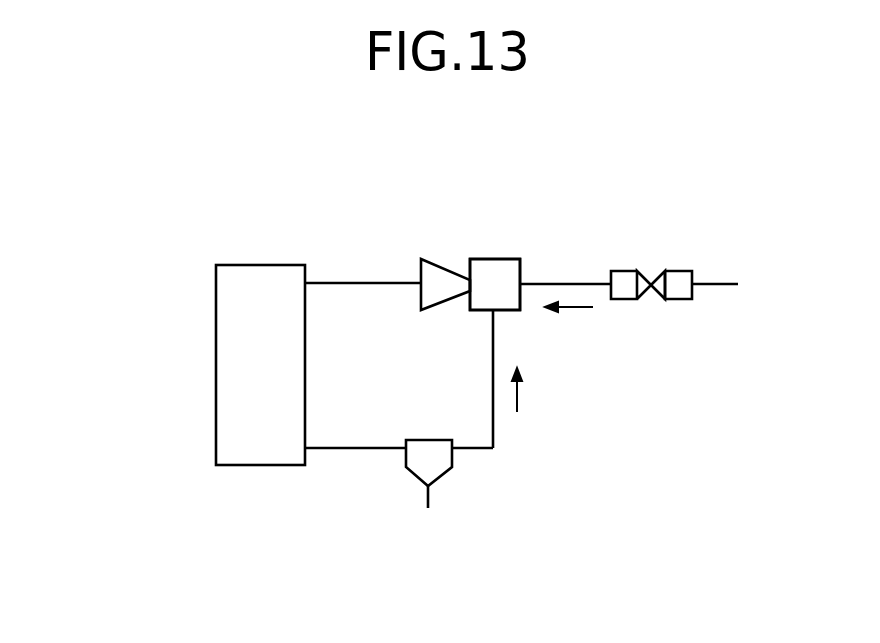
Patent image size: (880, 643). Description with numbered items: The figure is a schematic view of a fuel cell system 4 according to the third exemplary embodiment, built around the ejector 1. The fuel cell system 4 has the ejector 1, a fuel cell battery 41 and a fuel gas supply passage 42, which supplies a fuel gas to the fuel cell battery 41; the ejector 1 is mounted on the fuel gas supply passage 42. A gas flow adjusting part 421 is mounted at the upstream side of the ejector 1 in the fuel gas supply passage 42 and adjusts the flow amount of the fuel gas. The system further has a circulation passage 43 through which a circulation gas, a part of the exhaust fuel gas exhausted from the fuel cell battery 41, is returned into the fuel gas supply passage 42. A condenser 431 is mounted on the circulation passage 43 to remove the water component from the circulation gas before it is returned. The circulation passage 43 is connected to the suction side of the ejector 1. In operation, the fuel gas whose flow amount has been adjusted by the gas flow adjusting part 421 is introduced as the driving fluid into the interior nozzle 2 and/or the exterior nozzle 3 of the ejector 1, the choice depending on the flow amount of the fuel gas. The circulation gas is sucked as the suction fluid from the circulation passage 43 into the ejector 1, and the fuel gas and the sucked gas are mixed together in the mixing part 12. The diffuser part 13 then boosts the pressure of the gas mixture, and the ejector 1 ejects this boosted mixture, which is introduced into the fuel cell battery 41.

The ejector 1 is at (443, 215).
The interior nozzle 2 is at (513, 273).
The exterior nozzle 3 is at (490, 271).
The mixing part 12 is at (443, 283).
The diffuser part 13 is at (420, 274).
The fuel cell system 4 is at (673, 528).
The fuel cell battery 41 is at (243, 399).
The fuel gas supply passage 42 is at (580, 283).
The gas flow adjusting part 421 is at (626, 287).
The circulation passage 43 is at (495, 432).
The condenser 431 is at (430, 463).